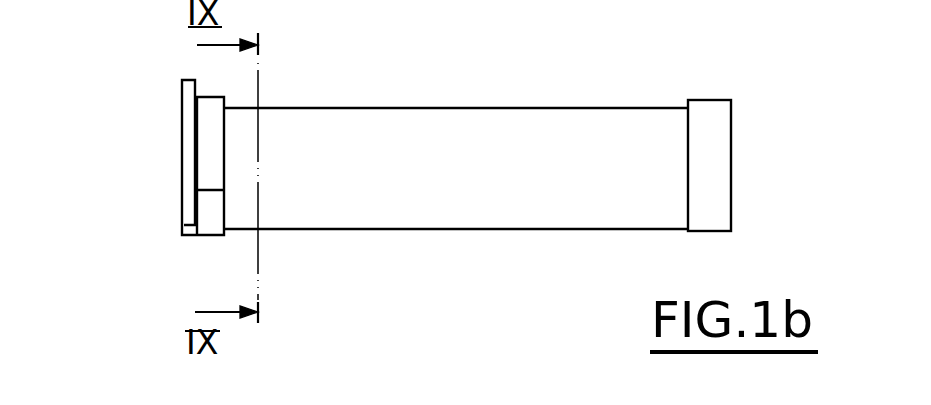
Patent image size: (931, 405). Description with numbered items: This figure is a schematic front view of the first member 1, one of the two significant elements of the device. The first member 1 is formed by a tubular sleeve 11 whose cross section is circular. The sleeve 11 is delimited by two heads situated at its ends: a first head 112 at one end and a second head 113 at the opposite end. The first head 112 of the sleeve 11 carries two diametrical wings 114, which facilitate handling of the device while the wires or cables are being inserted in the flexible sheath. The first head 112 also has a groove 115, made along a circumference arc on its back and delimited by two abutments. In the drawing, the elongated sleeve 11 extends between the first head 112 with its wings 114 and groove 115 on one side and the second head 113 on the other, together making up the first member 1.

The first member 1 is at (406, 179).
The tubular sleeve 11 is at (515, 213).
The first head 112 is at (200, 237).
The second head 113 is at (710, 100).
The diametrical wings 114 is at (184, 162).
The groove 115 is at (213, 123).